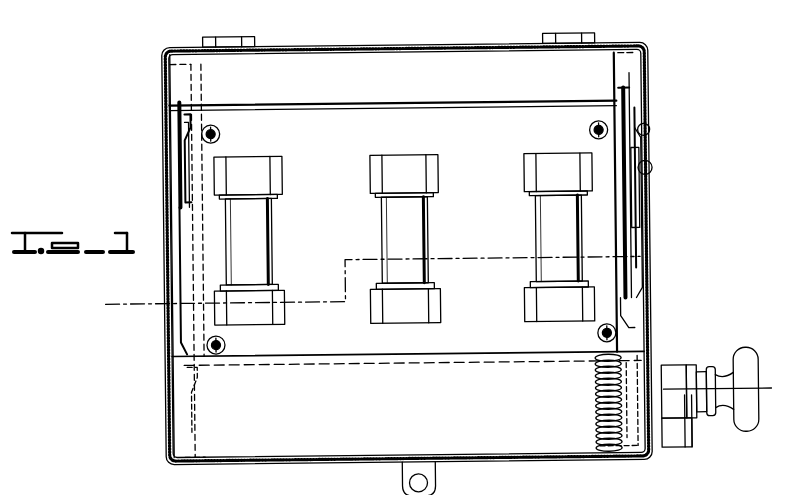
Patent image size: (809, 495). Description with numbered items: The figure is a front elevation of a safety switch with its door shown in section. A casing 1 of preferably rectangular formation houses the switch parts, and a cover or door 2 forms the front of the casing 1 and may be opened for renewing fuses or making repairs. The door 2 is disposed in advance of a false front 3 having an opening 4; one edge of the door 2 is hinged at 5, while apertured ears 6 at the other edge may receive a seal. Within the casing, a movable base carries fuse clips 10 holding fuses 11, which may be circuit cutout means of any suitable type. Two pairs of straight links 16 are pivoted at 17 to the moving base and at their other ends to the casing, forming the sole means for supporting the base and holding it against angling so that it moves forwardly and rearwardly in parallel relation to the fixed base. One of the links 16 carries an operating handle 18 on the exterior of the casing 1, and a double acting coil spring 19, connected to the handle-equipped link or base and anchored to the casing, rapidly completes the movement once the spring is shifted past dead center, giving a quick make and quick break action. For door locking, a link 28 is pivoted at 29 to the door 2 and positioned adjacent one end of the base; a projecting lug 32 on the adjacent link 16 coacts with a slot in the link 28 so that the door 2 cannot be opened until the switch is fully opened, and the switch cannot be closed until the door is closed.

The casing 1 is at (382, 62).
The door 2 is at (160, 301).
The false front 3 is at (412, 378).
The opening 4 is at (484, 343).
The hinge 5 is at (226, 42).
The apertured ears 6 is at (433, 484).
The fuse clips 10 is at (577, 172).
The fuses 11 is at (258, 245).
The links 16 is at (178, 118).
The pivot 17 is at (184, 136).
The operating handle 18 is at (690, 376).
The double acting coil spring 19 is at (590, 412).
The link 28 is at (642, 210).
The pivot 29 is at (656, 131).
The projecting lug 32 is at (654, 176).